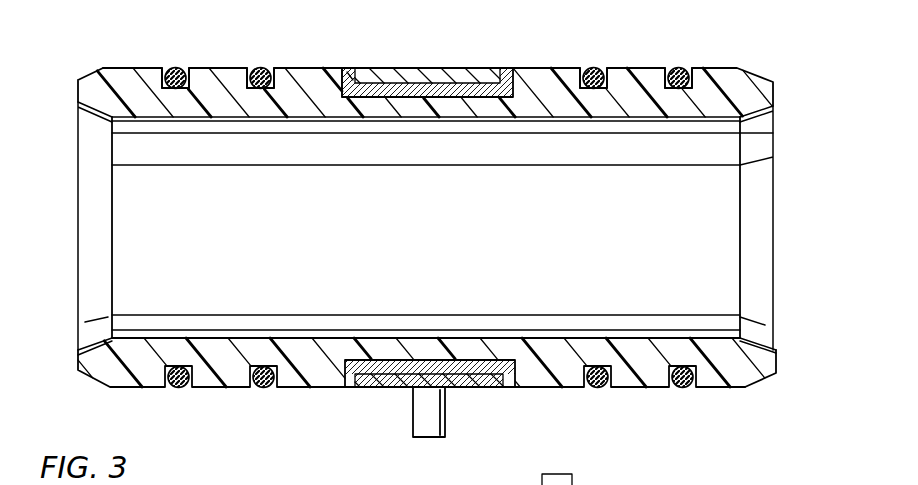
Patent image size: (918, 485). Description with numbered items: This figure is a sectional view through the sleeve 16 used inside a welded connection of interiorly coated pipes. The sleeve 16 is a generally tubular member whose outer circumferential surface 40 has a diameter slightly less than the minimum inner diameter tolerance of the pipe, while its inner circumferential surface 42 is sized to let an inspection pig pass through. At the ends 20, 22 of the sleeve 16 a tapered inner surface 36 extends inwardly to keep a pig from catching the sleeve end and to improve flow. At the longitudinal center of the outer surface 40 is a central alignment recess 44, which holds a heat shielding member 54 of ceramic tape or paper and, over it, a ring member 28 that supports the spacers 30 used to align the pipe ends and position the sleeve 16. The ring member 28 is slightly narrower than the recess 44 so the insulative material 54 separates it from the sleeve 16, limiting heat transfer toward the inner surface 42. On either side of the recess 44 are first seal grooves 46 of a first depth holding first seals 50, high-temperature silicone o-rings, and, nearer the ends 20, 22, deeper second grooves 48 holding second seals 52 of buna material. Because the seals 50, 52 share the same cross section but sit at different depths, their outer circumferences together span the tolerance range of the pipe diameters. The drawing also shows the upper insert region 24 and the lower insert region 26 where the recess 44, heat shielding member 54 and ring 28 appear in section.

The sleeve 16 is at (204, 404).
The end of the sleeve 20 is at (760, 142).
The end of the sleeve 22 is at (107, 165).
The upper insert assembly 24 is at (497, 56).
The lower insert assembly 26 is at (430, 373).
The ring member 28 is at (436, 74).
The spacer 30 is at (447, 418).
The tapered inner surface 36 is at (80, 285).
The outer circumferential surface 40 is at (638, 68).
The inner circumferential surface 42 is at (653, 338).
The central alignment recess 44 is at (354, 80).
The first seal groove 46 is at (263, 88).
The second seal groove 48 is at (178, 88).
The first seal 50 is at (262, 66).
The second seal 52 is at (172, 66).
The heat shielding member 54 is at (489, 97).